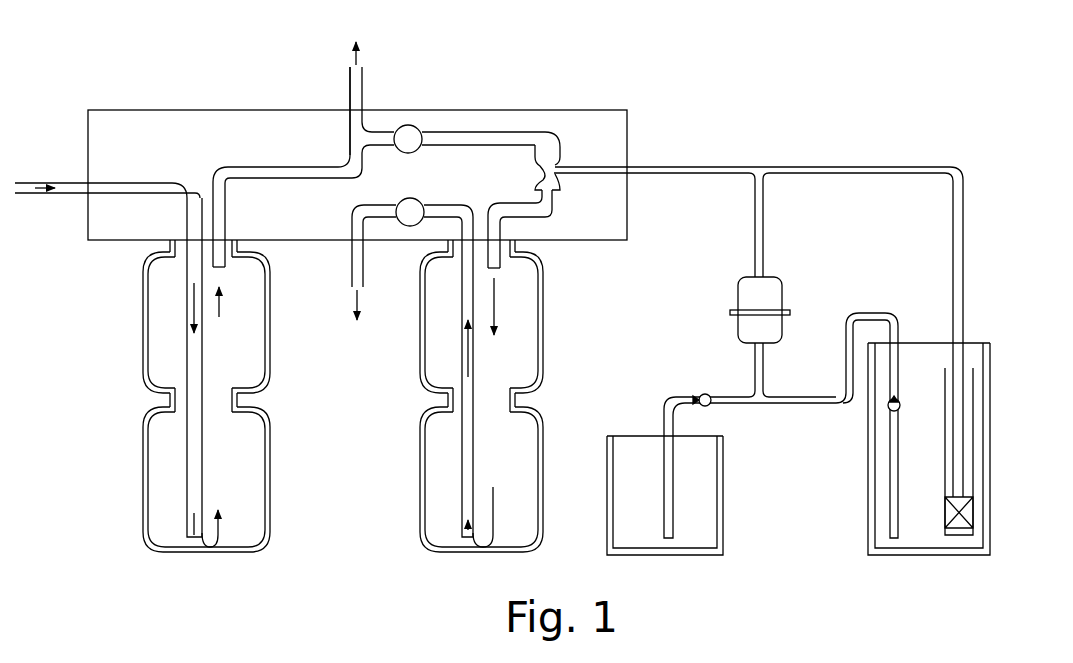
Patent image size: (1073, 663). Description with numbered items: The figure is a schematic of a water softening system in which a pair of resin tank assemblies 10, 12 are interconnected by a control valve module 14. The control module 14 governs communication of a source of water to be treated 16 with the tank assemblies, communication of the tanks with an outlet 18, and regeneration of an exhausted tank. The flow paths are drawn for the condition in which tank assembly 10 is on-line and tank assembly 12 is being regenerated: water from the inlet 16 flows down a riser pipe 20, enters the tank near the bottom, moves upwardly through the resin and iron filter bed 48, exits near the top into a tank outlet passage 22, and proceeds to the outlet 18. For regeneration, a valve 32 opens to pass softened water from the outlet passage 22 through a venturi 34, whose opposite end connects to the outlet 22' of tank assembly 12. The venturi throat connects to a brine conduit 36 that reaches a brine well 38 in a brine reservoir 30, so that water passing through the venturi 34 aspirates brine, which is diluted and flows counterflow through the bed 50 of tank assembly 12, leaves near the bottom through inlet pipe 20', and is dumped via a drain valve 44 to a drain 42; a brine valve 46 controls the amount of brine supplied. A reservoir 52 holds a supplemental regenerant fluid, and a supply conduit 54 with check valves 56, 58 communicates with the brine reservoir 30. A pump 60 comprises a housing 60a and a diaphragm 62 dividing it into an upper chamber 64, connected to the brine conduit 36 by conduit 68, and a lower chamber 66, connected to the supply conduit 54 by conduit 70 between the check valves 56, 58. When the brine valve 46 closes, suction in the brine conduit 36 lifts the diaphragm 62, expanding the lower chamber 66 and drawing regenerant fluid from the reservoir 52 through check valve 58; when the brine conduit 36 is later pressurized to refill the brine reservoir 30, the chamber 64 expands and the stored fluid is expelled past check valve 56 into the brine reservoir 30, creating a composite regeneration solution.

The resin tank assembly 10 is at (332, 309).
The resin tank assembly 12 is at (535, 368).
The control valve module 14 is at (494, 105).
The source of water to be treated 16 is at (15, 176).
The outlet 18 is at (372, 86).
The riser pipe 20 is at (216, 372).
The inlet pipe 20' is at (494, 382).
The tank outlet passage 22 is at (287, 192).
The outlet 22' is at (535, 262).
The brine reservoir 30 is at (961, 467).
The valve 32 is at (413, 124).
The venturi 34 is at (561, 147).
The brine conduit 36 is at (690, 165).
The brine well 38 is at (968, 415).
The drain 42 is at (365, 262).
The drain valve 44 is at (412, 197).
The brine valve 46 is at (980, 506).
The iron filter bed 48 is at (250, 350).
The iron filter bed 50 is at (250, 484).
The reservoir 52 is at (707, 508).
The supply conduit 54 is at (800, 425).
The check valve 56 is at (708, 390).
The check valve 58 is at (898, 412).
The pump 60 is at (799, 281).
The housing 60a is at (784, 290).
The diaphragm 62 is at (778, 312).
The upper chamber 64 is at (758, 296).
The lower chamber 66 is at (771, 339).
The conduit 68 is at (765, 211).
The conduit 70 is at (765, 372).